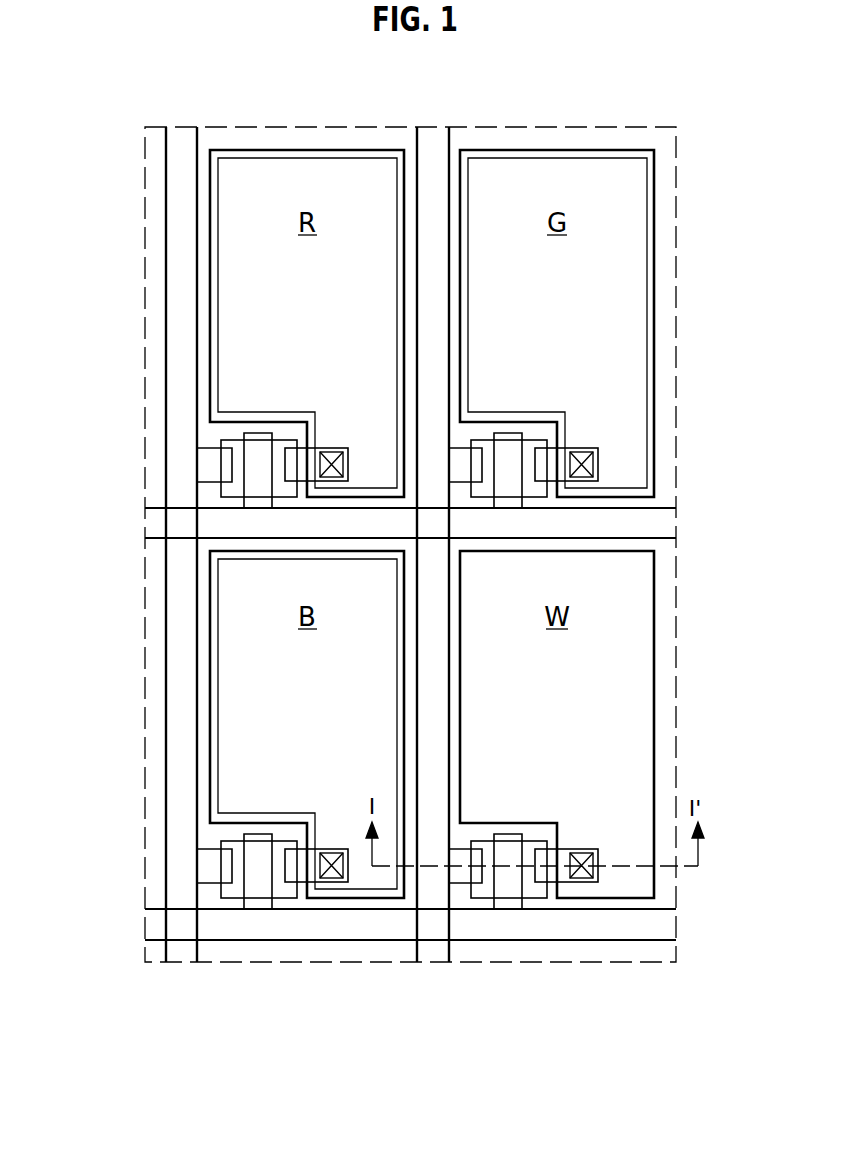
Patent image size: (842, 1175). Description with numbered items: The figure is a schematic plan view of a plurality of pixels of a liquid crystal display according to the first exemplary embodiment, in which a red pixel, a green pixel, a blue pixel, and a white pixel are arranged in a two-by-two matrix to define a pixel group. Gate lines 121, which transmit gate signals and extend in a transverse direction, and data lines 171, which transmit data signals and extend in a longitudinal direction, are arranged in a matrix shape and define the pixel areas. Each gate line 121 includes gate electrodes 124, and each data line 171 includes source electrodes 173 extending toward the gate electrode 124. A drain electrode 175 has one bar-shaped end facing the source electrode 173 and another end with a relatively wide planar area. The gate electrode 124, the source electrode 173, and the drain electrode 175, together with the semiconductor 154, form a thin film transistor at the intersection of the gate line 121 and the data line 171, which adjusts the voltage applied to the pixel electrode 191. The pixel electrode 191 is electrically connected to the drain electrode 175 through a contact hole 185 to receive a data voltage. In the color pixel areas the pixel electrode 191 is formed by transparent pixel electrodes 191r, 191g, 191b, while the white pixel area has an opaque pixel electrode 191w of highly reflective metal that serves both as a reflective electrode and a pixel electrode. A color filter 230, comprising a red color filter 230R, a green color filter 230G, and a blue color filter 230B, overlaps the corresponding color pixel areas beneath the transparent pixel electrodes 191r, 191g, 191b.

The gate line 121 is at (210, 508).
The gate electrode 124 is at (283, 445).
The semiconductor 154 is at (222, 440).
The data line 171 is at (197, 322).
The source electrode 173 is at (221, 482).
The drain electrode 175 is at (328, 448).
The contact hole 185 is at (337, 452).
The pixel electrode 191 is at (414, 563).
The transparent pixel electrode 191r is at (278, 150).
The transparent pixel electrode 191g is at (526, 149).
The transparent pixel electrode 191b is at (210, 738).
The opaque pixel electrode 191w is at (655, 724).
The color filter 230 is at (352, 582).
The red color filter 230R is at (352, 158).
The green color filter 230G is at (600, 157).
The blue color filter 230B is at (218, 682).